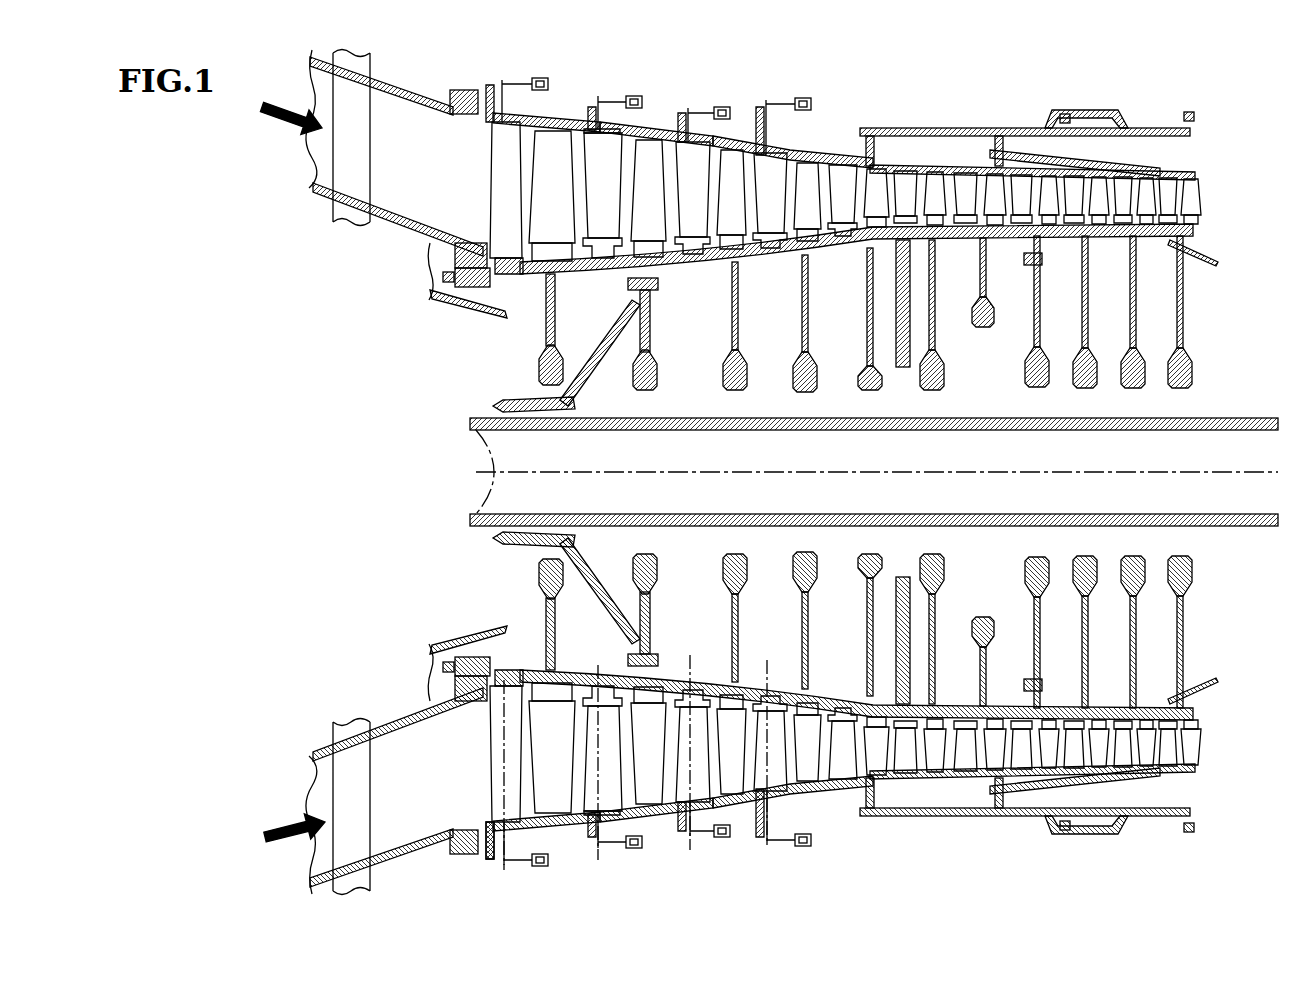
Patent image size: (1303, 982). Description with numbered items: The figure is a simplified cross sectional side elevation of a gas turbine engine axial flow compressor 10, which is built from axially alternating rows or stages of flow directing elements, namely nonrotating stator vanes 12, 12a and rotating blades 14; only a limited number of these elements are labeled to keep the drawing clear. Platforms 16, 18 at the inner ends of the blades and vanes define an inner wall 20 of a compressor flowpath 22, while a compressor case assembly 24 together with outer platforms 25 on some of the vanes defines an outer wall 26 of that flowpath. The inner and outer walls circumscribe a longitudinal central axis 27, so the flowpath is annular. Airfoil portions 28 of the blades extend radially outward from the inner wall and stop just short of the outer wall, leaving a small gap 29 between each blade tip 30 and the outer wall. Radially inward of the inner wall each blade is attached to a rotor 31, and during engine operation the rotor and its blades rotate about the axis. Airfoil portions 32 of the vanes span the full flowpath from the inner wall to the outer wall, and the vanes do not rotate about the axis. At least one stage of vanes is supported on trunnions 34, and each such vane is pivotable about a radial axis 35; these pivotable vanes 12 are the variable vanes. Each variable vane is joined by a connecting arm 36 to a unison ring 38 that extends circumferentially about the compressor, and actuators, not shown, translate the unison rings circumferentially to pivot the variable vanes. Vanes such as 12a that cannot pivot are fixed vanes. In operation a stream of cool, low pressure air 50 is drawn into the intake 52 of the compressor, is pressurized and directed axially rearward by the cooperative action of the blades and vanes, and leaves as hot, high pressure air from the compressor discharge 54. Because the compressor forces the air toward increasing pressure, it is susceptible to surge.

The axial flow compressor 10 is at (246, 152).
The stator vanes 12 is at (619, 204).
The fixed vane 12a is at (1057, 190).
The rotating blades 14 is at (564, 204).
The blade platforms 16 is at (567, 238).
The vane platforms 18 is at (617, 238).
The inner wall 20 is at (524, 245).
The compressor flowpath 22 is at (617, 137).
The compressor case assembly 24 is at (671, 143).
The outer platforms 25 is at (1107, 190).
The outer wall 26 is at (600, 157).
The longitudinal central axis 27 is at (478, 441).
The blade airfoil portions 28 is at (533, 181).
The gap 29 is at (506, 190).
The blade tip 30 is at (580, 143).
The rotor 31 is at (860, 250).
The vane airfoil portions 32 is at (535, 160).
The trunnions 34 is at (502, 866).
The radial axis 35 is at (507, 782).
The connecting arm 36 is at (505, 866).
The unison ring 38 is at (550, 867).
The low pressure air 50 is at (292, 108).
The intake 52 is at (390, 157).
The compressor discharge 54 is at (1207, 198).